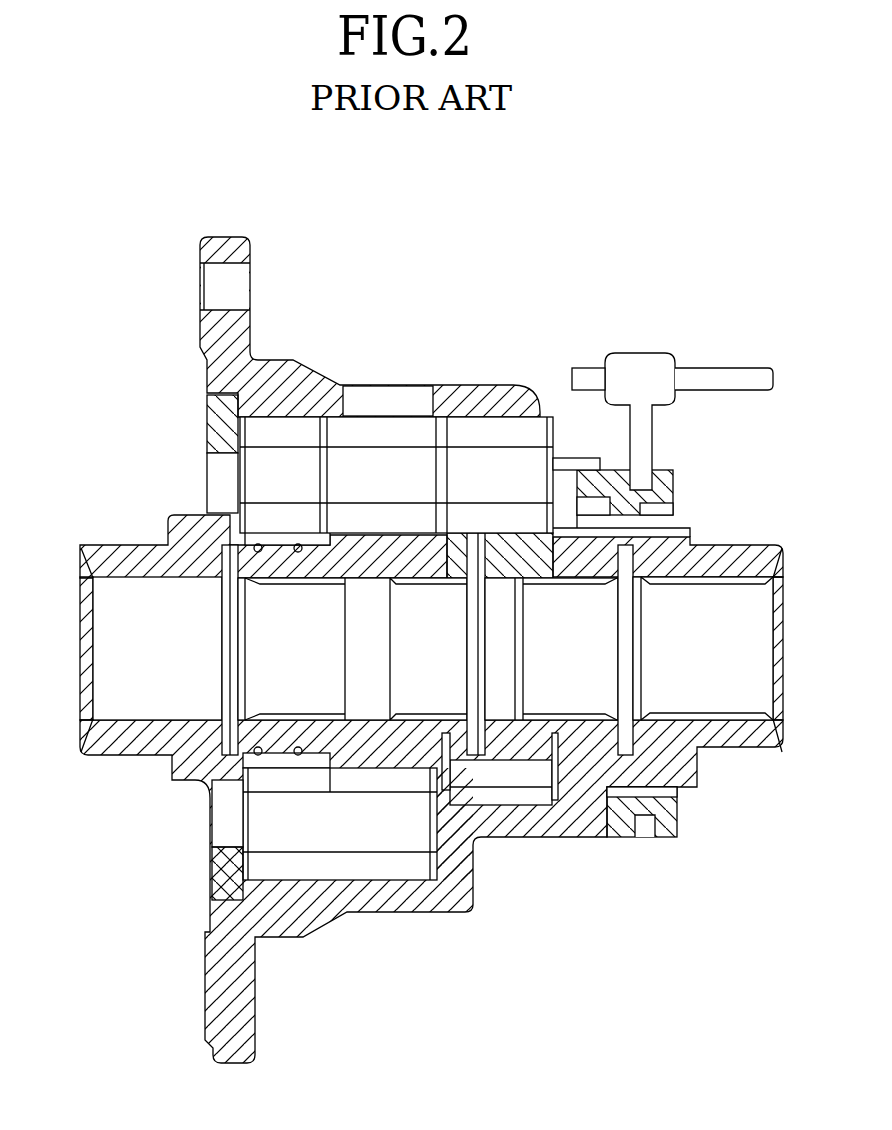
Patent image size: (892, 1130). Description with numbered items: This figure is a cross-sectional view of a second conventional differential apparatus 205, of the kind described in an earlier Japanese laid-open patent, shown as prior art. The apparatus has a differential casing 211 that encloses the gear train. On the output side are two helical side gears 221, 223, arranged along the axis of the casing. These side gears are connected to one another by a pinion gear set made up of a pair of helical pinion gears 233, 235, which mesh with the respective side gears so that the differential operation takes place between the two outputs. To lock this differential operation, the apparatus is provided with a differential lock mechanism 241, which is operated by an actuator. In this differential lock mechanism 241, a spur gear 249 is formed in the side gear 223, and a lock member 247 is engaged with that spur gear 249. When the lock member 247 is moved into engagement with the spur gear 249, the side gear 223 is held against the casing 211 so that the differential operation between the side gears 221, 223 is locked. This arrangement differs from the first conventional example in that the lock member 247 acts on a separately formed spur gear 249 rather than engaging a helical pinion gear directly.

The differential casing 211 is at (222, 237).
The helical pinion gear 233 is at (232, 433).
The helical side gear 221 is at (390, 517).
The differential lock mechanism 241 is at (672, 316).
The differential apparatus 205 is at (735, 355).
The lock member 247 is at (663, 490).
The helical side gear 223 is at (502, 782).
The spur gear 249 is at (570, 797).
The helical pinion gear 235 is at (438, 885).